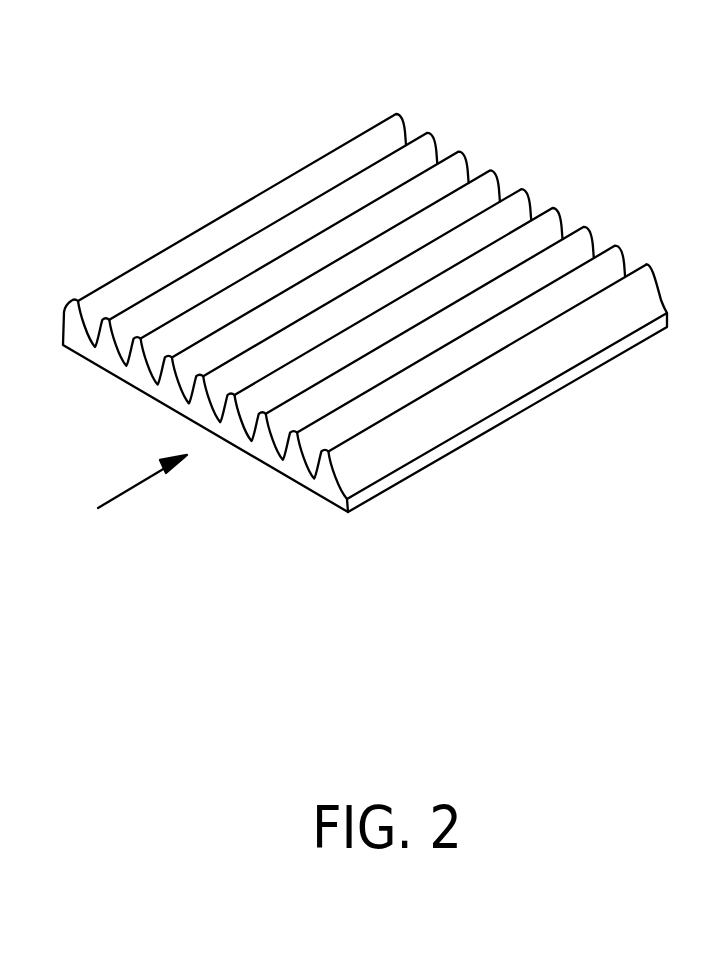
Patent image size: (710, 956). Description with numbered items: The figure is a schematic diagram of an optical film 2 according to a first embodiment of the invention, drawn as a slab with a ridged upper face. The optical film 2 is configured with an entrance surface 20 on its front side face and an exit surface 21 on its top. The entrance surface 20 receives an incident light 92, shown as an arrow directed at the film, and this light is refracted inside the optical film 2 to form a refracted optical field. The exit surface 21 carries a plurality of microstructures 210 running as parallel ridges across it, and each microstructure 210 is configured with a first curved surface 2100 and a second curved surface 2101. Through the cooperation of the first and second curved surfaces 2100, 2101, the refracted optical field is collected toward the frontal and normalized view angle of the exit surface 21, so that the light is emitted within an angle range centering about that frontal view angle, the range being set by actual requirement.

The optical film 2 is at (365, 367).
The entrance surface 20 is at (238, 447).
The exit surface 21 is at (460, 153).
The microstructure 210 is at (341, 600).
The first curved surface 2100 is at (323, 495).
The second curved surface 2101 is at (341, 495).
The incident light 92 is at (131, 491).